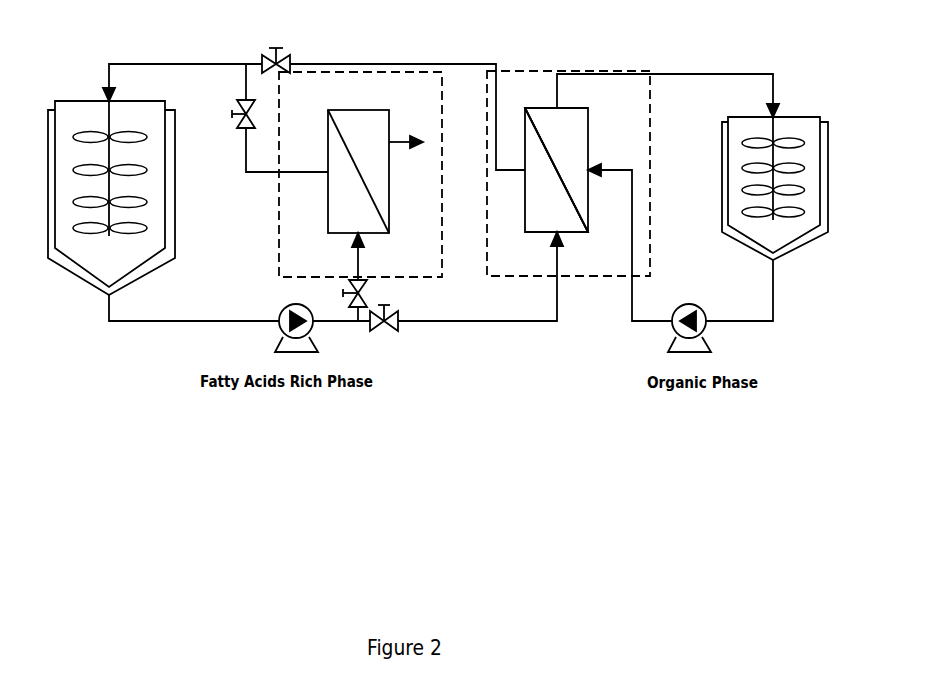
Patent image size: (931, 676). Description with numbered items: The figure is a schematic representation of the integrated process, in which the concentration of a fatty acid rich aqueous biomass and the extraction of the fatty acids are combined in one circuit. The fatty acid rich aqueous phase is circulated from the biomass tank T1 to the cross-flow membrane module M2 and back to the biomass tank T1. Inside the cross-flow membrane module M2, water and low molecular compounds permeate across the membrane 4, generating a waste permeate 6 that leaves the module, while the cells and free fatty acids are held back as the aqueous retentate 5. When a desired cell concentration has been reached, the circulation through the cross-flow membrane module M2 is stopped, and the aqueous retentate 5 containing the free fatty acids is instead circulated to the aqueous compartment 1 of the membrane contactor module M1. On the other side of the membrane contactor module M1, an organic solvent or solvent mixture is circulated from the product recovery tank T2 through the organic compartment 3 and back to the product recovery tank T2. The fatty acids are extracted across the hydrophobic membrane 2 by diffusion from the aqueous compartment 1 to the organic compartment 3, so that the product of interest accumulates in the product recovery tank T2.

The aqueous compartment 1 is at (556, 170).
The hydrophobic membrane 2 is at (569, 172).
The organic compartment 3 is at (556, 170).
The membrane 4 is at (362, 161).
The aqueous retentate 5 is at (280, 129).
The waste permeate 6 is at (406, 150).
The biomass tank T1 is at (111, 198).
The product recovery tank T2 is at (775, 188).
The membrane contactor module M1 is at (568, 141).
The cross-flow membrane module M2 is at (360, 141).